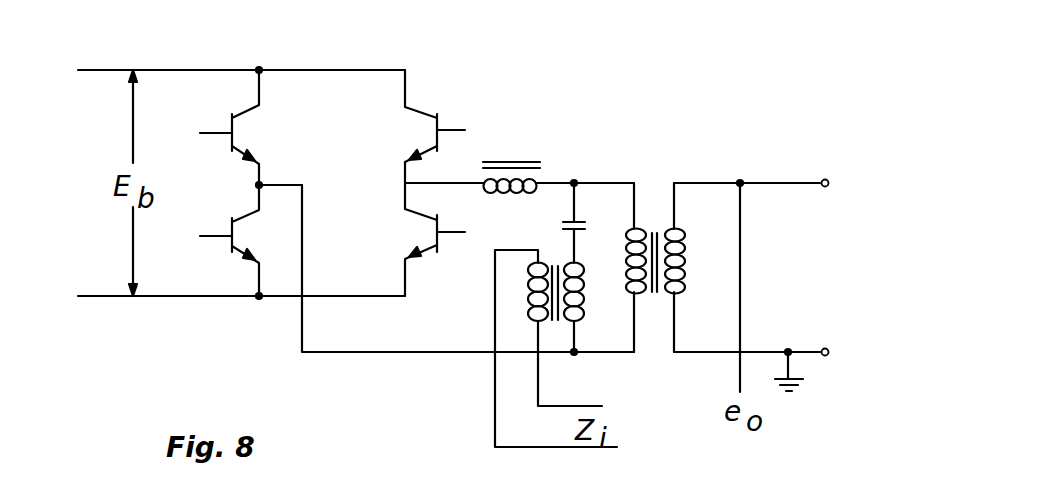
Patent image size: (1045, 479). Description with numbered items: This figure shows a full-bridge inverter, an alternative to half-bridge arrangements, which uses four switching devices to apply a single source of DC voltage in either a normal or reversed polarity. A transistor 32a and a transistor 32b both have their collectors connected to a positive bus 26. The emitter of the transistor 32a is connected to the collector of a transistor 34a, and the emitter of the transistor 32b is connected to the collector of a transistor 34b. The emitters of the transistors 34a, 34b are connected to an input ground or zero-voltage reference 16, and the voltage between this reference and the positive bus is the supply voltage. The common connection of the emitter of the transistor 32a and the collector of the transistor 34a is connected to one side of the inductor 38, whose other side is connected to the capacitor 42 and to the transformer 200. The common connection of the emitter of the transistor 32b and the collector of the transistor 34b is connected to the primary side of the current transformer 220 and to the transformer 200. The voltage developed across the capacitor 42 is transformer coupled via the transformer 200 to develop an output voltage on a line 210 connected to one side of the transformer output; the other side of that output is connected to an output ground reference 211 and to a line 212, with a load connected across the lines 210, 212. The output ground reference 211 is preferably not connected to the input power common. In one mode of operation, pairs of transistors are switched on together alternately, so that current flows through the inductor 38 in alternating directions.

The positive bus 26 is at (169, 70).
The input ground or zero-voltage reference 16 is at (112, 298).
The transistor 32a is at (430, 118).
The transistor 32b is at (240, 140).
The transistor 34a is at (426, 232).
The transistor 34b is at (230, 237).
The inductor 38 is at (541, 165).
The capacitor 42 is at (568, 223).
The current transformer 220 is at (561, 320).
The transformer 200 is at (653, 228).
The line 210 is at (789, 180).
The line 212 is at (807, 351).
The output ground reference 211 is at (802, 392).